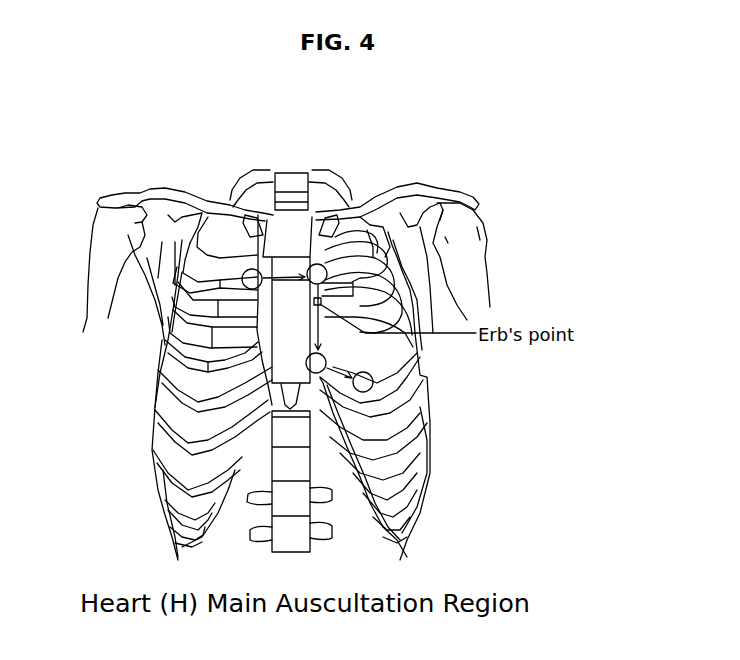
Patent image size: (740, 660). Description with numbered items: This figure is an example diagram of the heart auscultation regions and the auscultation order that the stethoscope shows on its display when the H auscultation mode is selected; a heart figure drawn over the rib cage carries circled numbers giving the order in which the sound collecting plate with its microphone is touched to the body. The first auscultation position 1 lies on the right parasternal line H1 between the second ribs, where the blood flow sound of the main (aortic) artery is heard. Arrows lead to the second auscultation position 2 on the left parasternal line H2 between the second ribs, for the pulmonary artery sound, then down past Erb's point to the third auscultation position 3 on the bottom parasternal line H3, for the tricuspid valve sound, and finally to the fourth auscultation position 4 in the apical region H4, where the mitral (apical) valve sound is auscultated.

The first auscultation position 1 is at (154, 342).
The second auscultation position 2 is at (434, 218).
The third auscultation position 3 is at (459, 375).
The fourth auscultation position 4 is at (497, 416).
The right parasternal line H1 is at (243, 284).
The left parasternal line H2 is at (322, 266).
The bottom parasternal line H3 is at (327, 363).
The apical region H4 is at (369, 392).